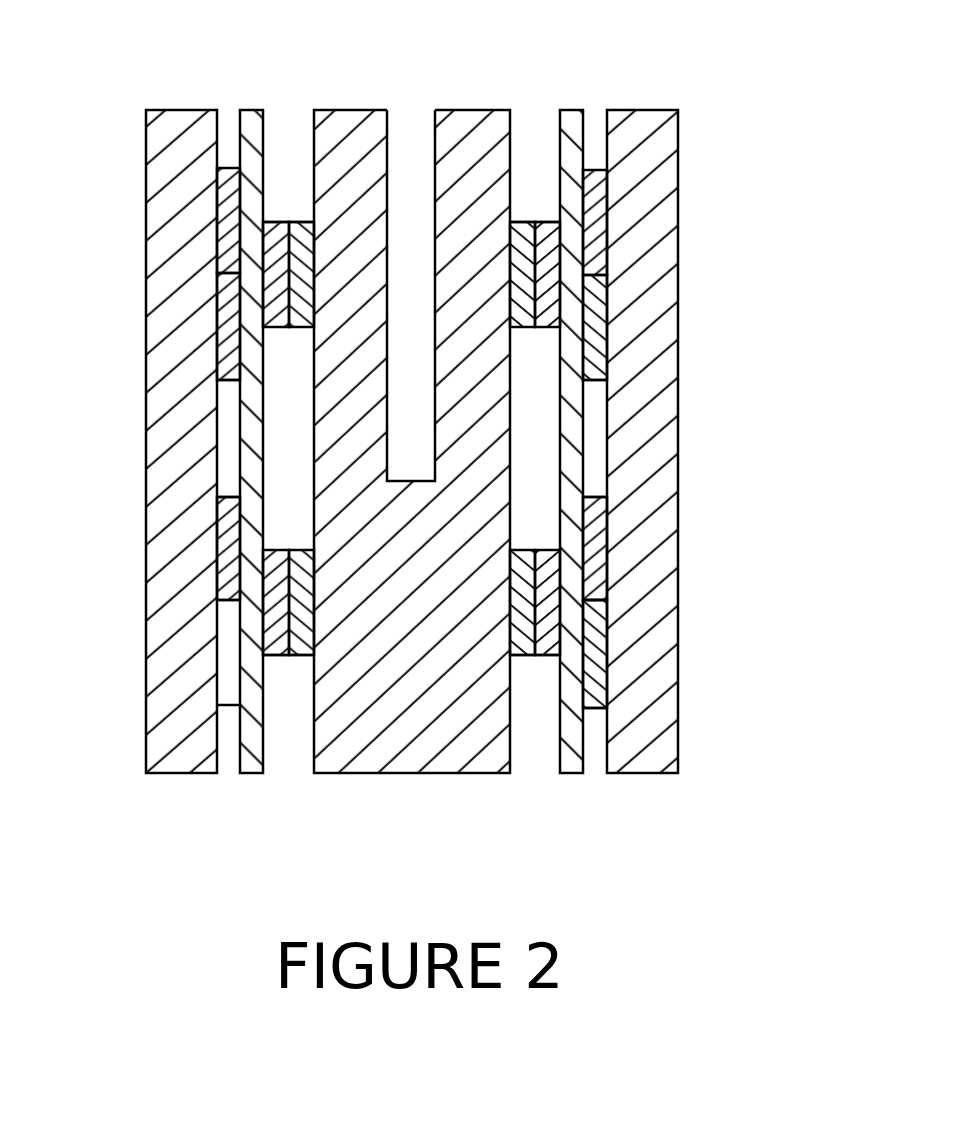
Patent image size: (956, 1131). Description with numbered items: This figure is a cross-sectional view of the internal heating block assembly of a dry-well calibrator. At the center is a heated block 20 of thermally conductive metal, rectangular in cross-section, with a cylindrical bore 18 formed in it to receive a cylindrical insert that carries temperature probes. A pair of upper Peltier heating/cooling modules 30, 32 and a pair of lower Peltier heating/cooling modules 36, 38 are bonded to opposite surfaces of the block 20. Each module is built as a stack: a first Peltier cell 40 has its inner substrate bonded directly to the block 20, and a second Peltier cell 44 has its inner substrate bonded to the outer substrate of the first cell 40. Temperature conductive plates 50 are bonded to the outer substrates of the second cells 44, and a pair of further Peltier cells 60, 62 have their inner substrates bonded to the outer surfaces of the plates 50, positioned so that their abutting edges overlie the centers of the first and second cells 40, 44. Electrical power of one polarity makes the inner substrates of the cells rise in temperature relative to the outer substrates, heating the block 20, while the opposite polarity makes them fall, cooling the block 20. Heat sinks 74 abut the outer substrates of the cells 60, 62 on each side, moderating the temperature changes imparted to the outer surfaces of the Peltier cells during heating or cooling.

The cylindrical bore 18 is at (422, 104).
The heated block 20 is at (430, 664).
The upper Peltier heating/cooling module 30 is at (288, 180).
The upper Peltier heating/cooling module 32 is at (533, 180).
The lower Peltier heating/cooling module 36 is at (287, 680).
The lower Peltier heating/cooling module 38 is at (533, 680).
The first Peltier cell 40 is at (300, 330).
The second Peltier cell 44 is at (283, 330).
The temperature conductive plate 50 is at (252, 108).
The Peltier cell 60 is at (228, 168).
The Peltier cell 62 is at (240, 382).
The heat sink 74 is at (150, 603).